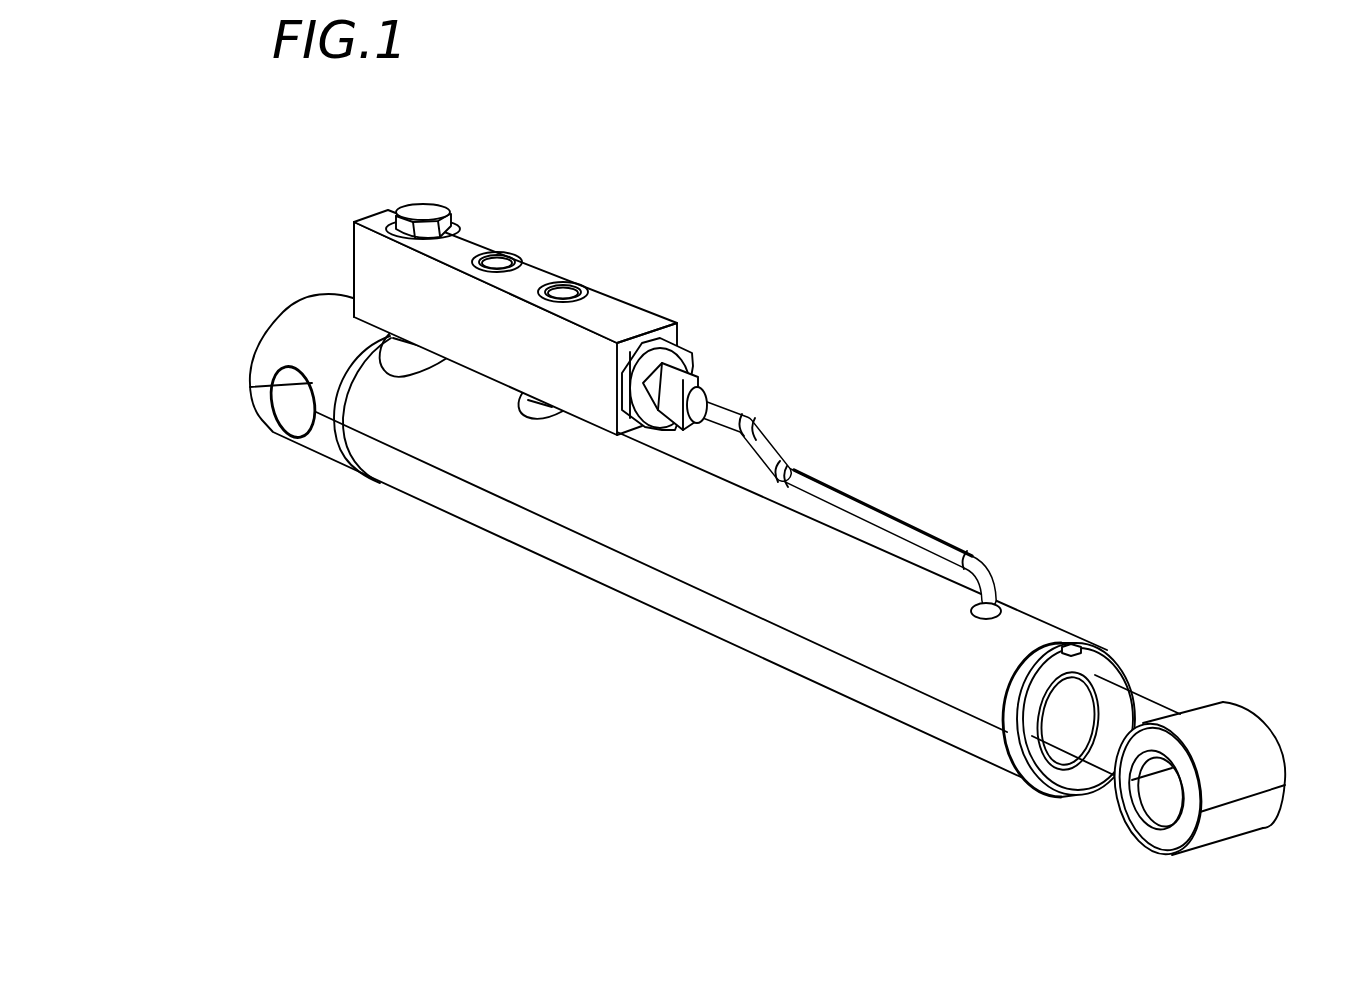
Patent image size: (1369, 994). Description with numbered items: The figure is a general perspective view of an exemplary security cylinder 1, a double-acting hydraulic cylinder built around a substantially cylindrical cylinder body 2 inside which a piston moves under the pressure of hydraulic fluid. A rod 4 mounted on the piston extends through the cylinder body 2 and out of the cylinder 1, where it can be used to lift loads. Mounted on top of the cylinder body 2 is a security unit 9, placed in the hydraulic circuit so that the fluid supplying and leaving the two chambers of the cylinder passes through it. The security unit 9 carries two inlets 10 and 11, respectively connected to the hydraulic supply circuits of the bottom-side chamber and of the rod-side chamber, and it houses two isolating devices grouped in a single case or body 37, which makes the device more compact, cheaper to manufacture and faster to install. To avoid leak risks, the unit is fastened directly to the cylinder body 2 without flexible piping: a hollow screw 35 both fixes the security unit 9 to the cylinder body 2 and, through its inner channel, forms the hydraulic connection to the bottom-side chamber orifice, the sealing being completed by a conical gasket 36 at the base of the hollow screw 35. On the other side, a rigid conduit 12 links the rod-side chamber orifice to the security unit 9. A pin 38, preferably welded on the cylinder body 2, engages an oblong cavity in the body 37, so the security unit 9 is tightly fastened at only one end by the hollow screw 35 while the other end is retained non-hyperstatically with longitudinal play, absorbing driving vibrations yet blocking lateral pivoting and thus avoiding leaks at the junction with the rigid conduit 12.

The security cylinder 1 is at (460, 724).
The cylinder body 2 is at (680, 593).
The rod 4 is at (1117, 703).
The security unit 9 is at (633, 308).
The inlet 10 is at (498, 258).
The inlet 11 is at (563, 290).
The rigid conduit 12 is at (862, 510).
The hollow screw 35 is at (423, 203).
The conical gasket 36 is at (397, 357).
The body 37 is at (378, 275).
The pin 38 is at (530, 400).